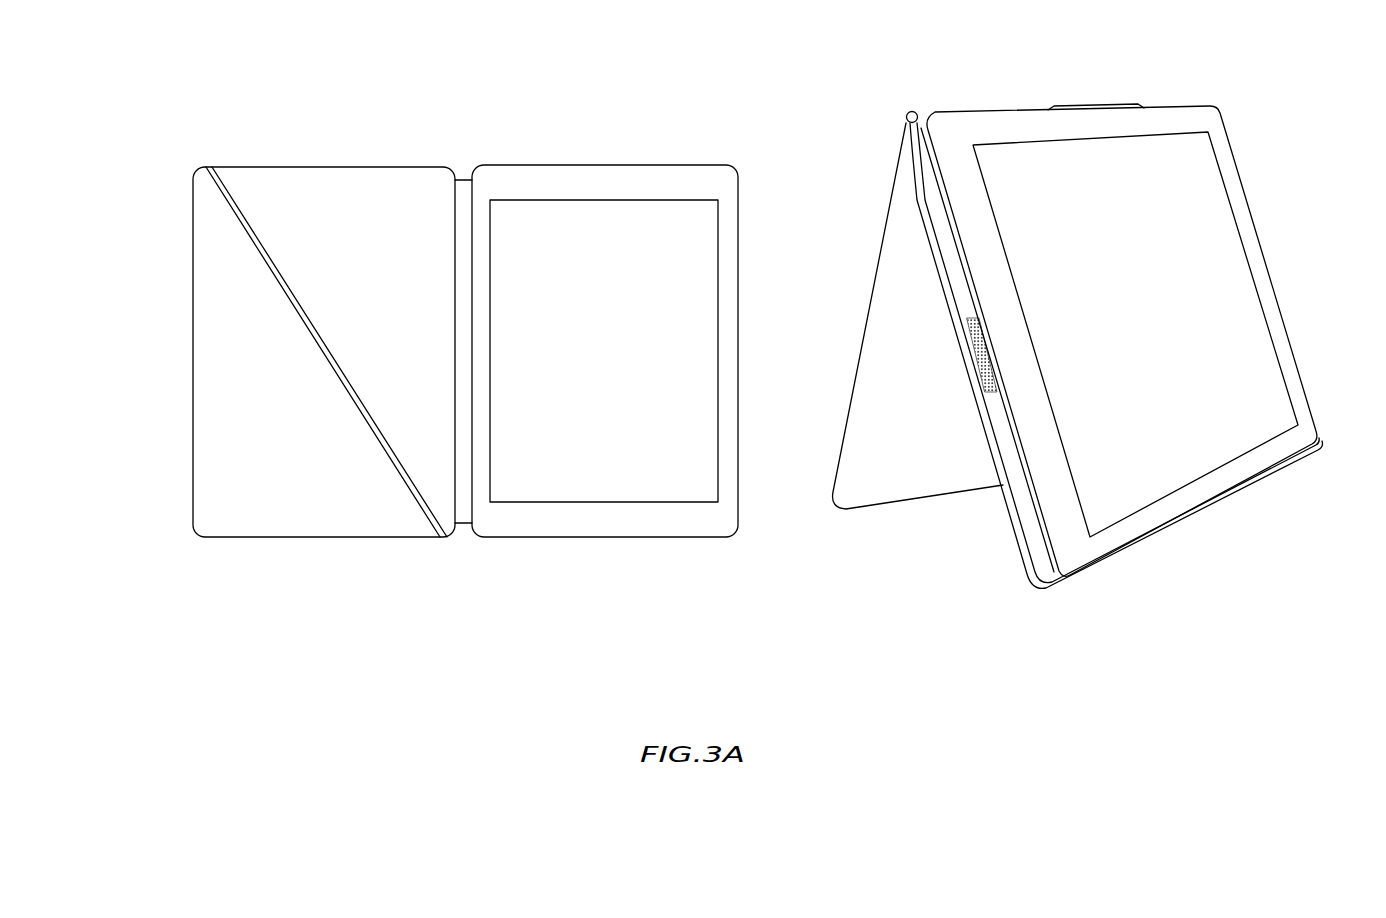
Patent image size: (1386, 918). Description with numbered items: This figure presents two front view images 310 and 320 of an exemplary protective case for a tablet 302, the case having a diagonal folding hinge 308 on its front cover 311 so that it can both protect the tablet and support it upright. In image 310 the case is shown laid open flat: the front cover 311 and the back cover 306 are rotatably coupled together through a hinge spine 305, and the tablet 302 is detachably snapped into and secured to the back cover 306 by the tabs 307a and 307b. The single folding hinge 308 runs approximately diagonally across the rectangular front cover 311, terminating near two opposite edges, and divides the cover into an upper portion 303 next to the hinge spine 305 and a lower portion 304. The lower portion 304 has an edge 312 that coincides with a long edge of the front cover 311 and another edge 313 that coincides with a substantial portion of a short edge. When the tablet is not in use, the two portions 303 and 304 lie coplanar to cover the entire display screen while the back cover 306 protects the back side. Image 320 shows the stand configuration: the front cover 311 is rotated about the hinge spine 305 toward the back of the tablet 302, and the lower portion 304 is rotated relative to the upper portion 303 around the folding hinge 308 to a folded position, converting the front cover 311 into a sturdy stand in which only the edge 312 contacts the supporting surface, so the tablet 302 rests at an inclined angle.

The tablet 302 is at (662, 187).
The upper portion 303 is at (394, 273).
The lower portion 304 is at (304, 452).
The hinge spine 305 is at (465, 184).
The back cover 306 is at (1033, 547).
The tab 307a is at (738, 332).
The tab 307b is at (552, 305).
The folding hinge 308 is at (349, 378).
The image 310 is at (378, 584).
The front cover 311 is at (302, 187).
The edge 312 is at (198, 338).
The edge 313 is at (318, 540).
The image 320 is at (1074, 608).